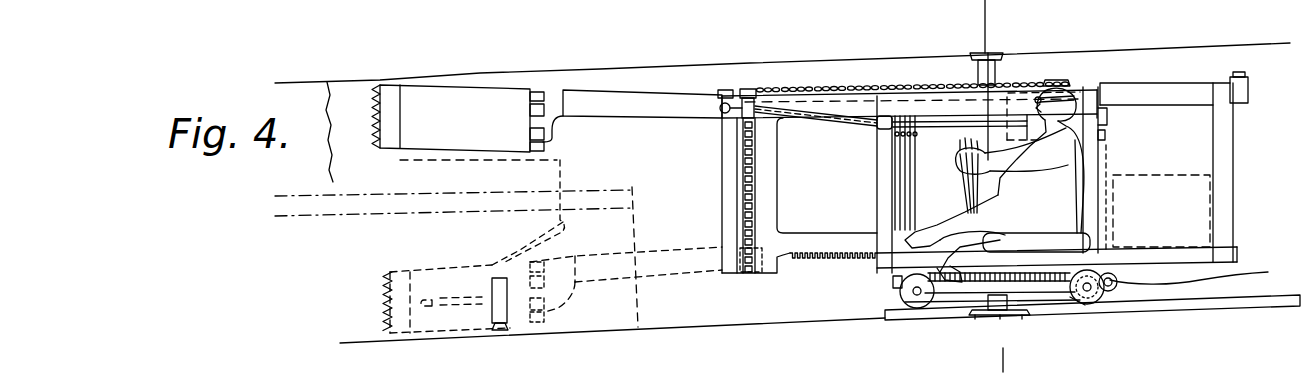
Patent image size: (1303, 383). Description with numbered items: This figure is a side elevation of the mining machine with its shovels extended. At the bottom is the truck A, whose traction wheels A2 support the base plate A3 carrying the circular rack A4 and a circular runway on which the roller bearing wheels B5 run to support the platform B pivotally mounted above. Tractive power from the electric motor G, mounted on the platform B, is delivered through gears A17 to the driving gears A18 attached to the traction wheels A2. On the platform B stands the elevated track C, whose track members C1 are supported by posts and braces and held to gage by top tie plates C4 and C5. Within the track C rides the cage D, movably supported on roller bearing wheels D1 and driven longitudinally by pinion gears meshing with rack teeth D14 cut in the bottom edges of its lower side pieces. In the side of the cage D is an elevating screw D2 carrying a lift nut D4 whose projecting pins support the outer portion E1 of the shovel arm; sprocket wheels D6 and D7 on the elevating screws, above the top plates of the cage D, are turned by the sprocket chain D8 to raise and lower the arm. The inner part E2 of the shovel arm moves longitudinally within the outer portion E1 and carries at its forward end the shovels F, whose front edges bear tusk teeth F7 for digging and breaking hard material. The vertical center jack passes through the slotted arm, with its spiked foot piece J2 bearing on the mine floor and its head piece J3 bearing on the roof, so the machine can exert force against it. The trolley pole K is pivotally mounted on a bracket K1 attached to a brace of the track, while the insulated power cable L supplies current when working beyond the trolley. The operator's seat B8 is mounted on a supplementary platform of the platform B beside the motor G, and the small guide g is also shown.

The shovels F is at (458, 209).
The tusk teeth F7 is at (376, 86).
The inner part of shovel arm E2 is at (613, 107).
The cage D is at (722, 216).
The elevating screw D2 is at (740, 154).
The lift nut D4 is at (742, 253).
The rack teeth D14 is at (821, 262).
The top tie plate C4 is at (730, 90).
The sprocket wheel D6 is at (750, 90).
The sprocket chain D8 is at (790, 89).
The roller bearing wheels D1 is at (912, 104).
The trolley pole K is at (845, 117).
The bracket K1 is at (886, 138).
The head piece J3 is at (996, 68).
The sprocket wheel D7 is at (1050, 81).
The elevated track C is at (1165, 94).
The track member C1 is at (1248, 93).
The top tie plate C5 is at (1245, 74).
The outer portion of shovel arm E1 is at (1108, 118).
The guide g is at (1106, 135).
The electric motor G is at (1161, 211).
The platform B is at (1057, 257).
The operator's seat B8 is at (1070, 243).
The truck A is at (951, 300).
The base plate A3 is at (999, 285).
The circular rack A4 is at (935, 291).
The traction wheels A2 is at (1087, 294).
The driving gears A18 is at (1104, 292).
The gears A17 is at (1070, 300).
The foot piece J2 is at (1024, 314).
The roller bearing wheels B5 is at (893, 284).
The insulated power cable L is at (1193, 274).